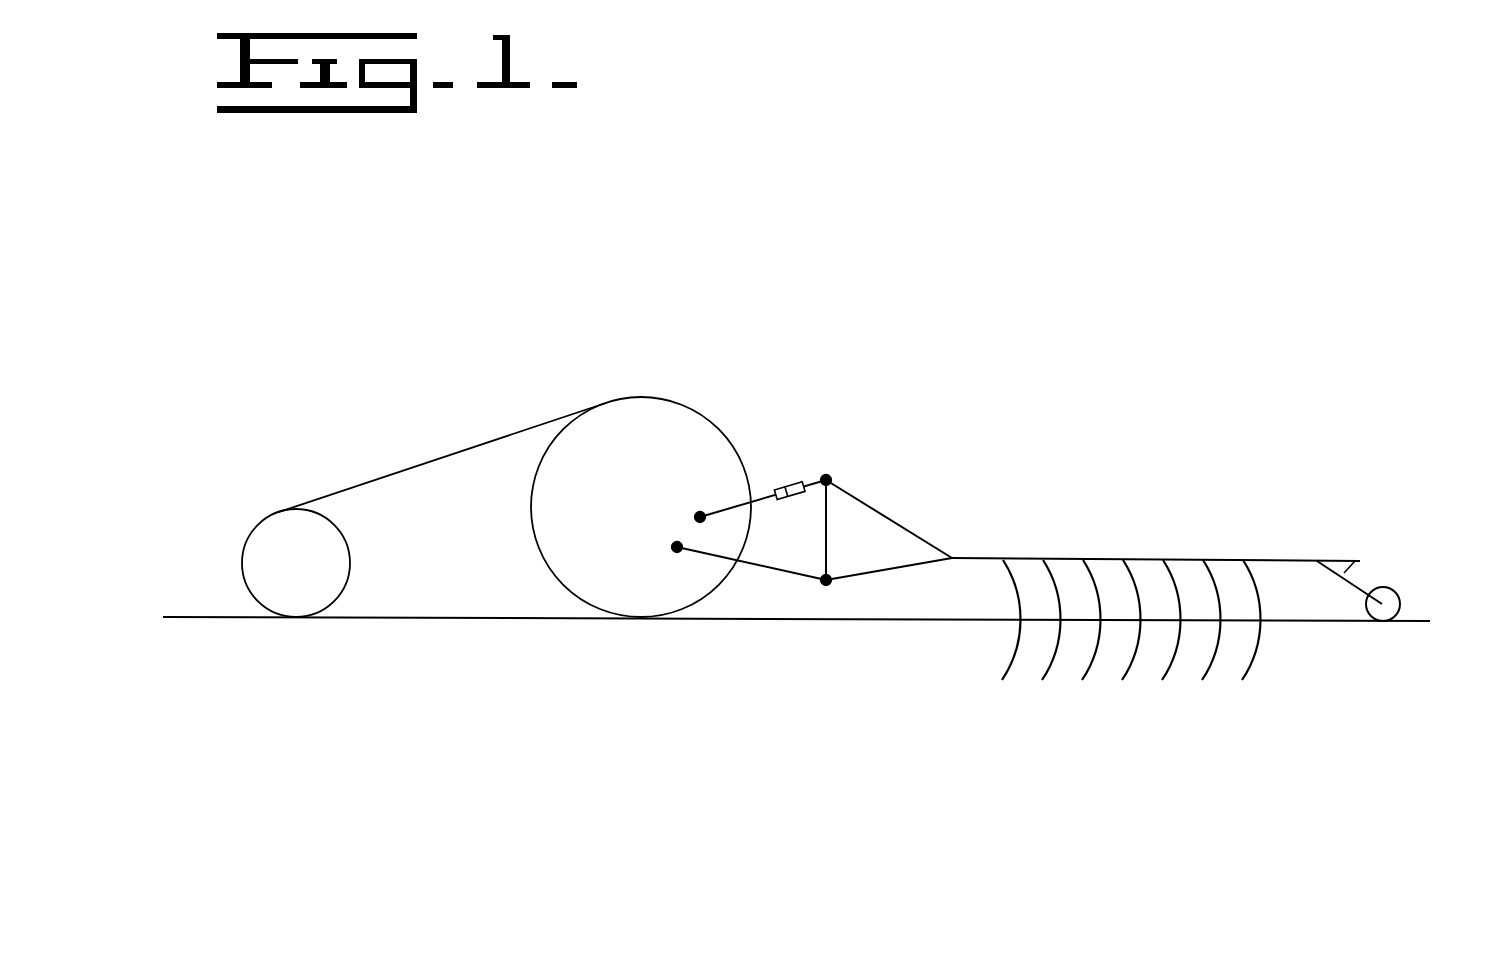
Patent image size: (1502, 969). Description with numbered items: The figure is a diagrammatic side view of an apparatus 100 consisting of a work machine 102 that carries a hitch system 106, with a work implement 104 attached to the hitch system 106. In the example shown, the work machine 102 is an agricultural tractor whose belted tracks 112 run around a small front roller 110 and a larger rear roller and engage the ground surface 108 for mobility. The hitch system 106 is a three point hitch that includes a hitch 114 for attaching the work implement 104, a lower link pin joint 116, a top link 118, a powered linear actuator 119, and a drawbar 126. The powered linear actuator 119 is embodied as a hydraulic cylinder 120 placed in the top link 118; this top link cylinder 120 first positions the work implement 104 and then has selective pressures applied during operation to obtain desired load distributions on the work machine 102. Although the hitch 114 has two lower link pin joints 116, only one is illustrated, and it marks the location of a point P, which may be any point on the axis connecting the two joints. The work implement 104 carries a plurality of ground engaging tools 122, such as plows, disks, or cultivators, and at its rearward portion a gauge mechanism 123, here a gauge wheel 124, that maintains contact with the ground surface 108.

The apparatus 100 is at (284, 207).
The work machine 102 is at (310, 303).
The work implement 104 is at (1253, 320).
The hitch system 106 is at (811, 320).
The ground surface 108 is at (238, 618).
The idler roller 110 is at (292, 487).
The belted tracks 112 is at (457, 452).
The hitch 114 is at (752, 420).
The lower link pin joint 116 is at (822, 583).
The top link 118 is at (727, 508).
The powered linear actuator 119 is at (815, 465).
The hydraulic cylinder 120 is at (793, 482).
The ground engaging tool 122 is at (1020, 630).
The gauge mechanism 123 is at (1403, 570).
The gauge wheel 124 is at (1403, 607).
The drawbar 126 is at (752, 567).
The point P is at (830, 585).